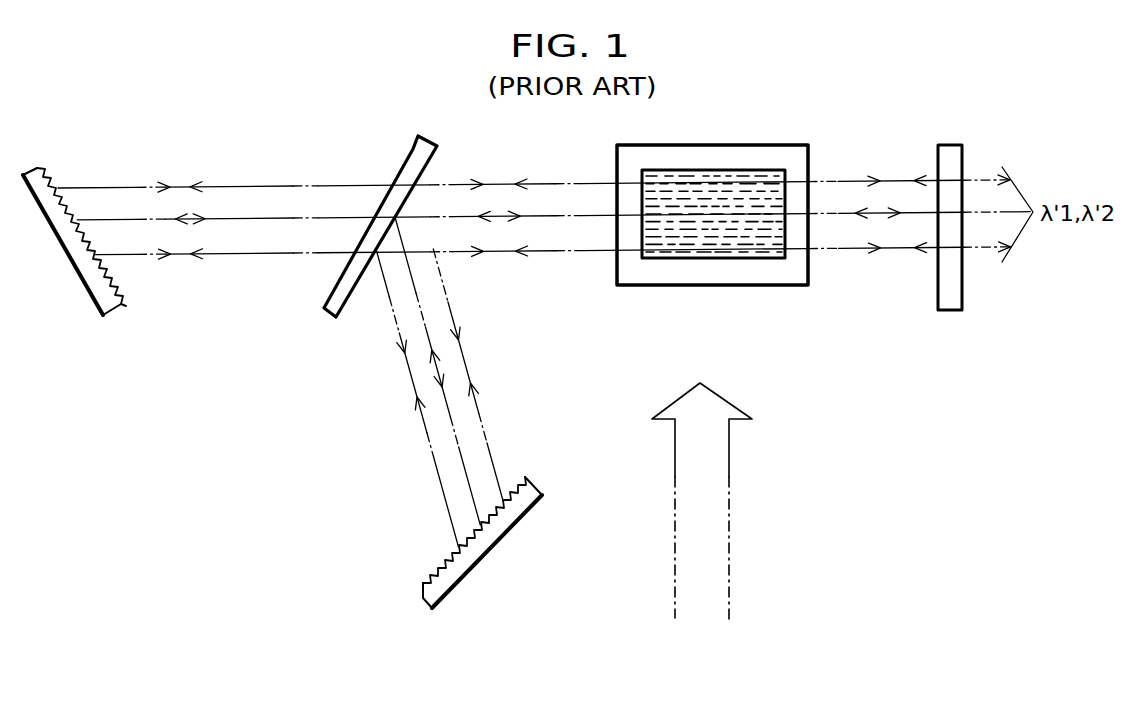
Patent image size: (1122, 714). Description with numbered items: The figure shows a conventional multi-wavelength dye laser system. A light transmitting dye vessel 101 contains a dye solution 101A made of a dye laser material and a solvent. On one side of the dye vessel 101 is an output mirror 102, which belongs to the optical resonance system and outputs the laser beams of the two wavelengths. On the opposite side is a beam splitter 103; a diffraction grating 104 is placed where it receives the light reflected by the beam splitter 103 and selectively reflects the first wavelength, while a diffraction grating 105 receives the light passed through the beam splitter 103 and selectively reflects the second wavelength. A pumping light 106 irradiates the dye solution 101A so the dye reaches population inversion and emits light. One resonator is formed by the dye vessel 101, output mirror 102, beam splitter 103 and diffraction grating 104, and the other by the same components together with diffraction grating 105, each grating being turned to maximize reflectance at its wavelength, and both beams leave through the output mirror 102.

The dye vessel 101 is at (653, 287).
The dye solution 101A is at (763, 235).
The output mirror 102 is at (955, 303).
The beam splitter 103 is at (335, 312).
The diffraction grating 104 is at (448, 587).
The diffraction grating 105 is at (106, 317).
The pumping light 106 is at (707, 587).